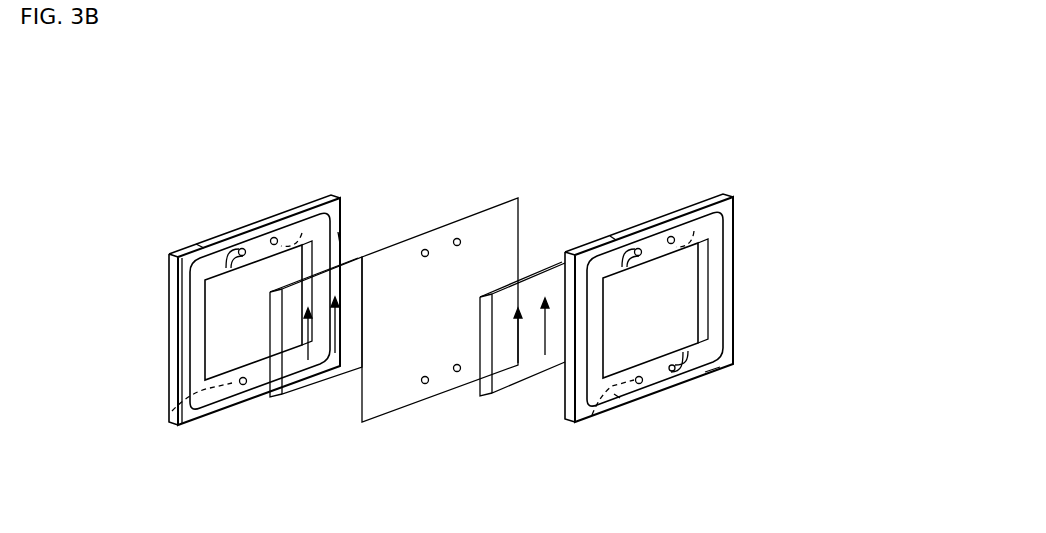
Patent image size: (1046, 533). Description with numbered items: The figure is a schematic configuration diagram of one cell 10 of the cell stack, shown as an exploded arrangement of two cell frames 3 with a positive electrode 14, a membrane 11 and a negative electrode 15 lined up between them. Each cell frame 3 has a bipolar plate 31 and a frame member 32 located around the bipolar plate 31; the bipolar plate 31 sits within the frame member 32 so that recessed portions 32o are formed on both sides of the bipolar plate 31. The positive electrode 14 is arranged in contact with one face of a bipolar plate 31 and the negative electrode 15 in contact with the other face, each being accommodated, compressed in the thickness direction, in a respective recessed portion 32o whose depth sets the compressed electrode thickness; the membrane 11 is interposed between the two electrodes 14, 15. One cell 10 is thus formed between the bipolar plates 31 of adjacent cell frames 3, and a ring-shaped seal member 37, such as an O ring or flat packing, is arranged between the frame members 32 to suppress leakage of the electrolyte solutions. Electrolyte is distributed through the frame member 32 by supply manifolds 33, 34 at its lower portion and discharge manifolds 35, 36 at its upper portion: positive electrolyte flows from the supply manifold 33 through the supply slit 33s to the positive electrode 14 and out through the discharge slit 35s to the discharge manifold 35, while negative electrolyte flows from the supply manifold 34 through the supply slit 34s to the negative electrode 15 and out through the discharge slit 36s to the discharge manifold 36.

The cell frame 3 is at (103, 342).
The cell 10 is at (416, 138).
The membrane 11 is at (468, 215).
The positive electrode 14 is at (332, 373).
The negative electrode 15 is at (508, 382).
The bipolar plate 31 is at (226, 329).
The frame member 32 is at (176, 325).
The recessed portion 32o is at (300, 265).
The supply manifold 33 is at (712, 376).
The supply slit 33s is at (690, 352).
The supply manifold 34 is at (242, 385).
The supply slit 34s is at (172, 411).
The discharge manifold 35 is at (240, 248).
The discharge slit 35s is at (200, 246).
The discharge manifold 36 is at (274, 237).
The discharge slit 36s is at (302, 233).
The seal member 37 is at (340, 238).